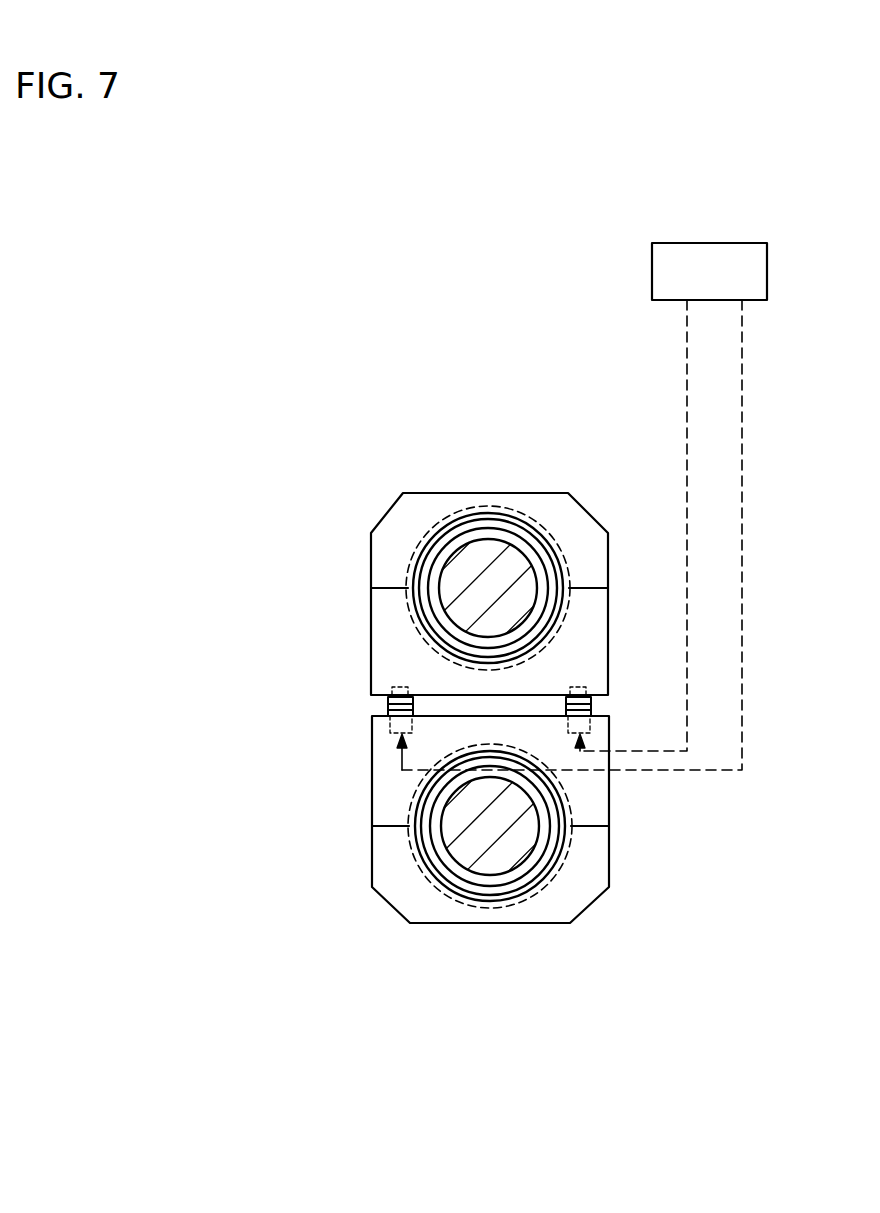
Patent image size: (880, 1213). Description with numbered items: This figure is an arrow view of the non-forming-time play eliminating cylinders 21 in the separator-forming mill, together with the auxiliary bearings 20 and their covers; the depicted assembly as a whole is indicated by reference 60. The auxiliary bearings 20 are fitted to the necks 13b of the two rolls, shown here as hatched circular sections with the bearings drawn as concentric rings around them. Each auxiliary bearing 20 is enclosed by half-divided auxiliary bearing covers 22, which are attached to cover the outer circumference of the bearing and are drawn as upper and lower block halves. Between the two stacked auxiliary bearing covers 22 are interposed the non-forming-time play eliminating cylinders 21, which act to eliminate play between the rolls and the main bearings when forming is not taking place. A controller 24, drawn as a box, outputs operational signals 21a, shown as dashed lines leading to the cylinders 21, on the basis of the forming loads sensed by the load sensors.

The clamp heating unit 60 is at (396, 396).
The auxiliary bearing 20 is at (483, 506).
The neck 13b is at (457, 555).
The auxiliary bearing cover 22 is at (386, 567).
The non-forming-time play eliminating cylinder 21 is at (382, 726).
The operational signal 21a is at (687, 535).
The controller 24 is at (710, 243).